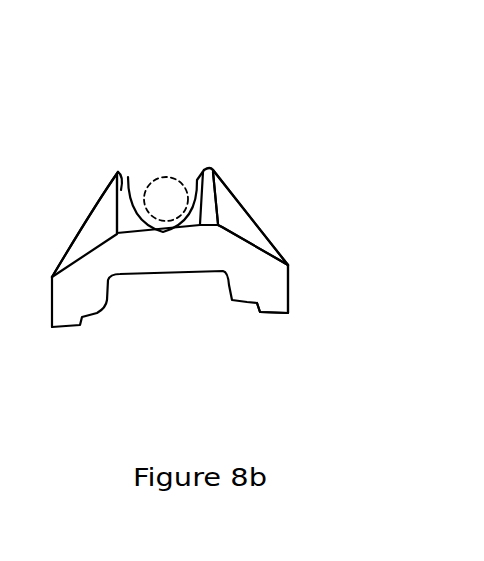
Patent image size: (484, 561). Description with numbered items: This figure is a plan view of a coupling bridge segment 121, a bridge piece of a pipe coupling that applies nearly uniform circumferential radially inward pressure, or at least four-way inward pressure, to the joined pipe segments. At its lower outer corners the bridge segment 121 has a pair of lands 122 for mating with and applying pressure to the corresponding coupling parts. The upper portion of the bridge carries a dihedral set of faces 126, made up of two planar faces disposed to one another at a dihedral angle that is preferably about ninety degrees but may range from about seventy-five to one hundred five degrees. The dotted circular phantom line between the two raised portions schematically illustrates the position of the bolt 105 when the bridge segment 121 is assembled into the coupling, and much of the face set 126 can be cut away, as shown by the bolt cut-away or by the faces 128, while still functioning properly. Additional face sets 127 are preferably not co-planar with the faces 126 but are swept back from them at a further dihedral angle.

The coupling bridge segment 121 is at (300, 272).
The land 122 is at (285, 313).
The dihedral set of faces 126 is at (128, 177).
The additional face sets 127 is at (233, 213).
The faces 128 is at (258, 218).
The bolt 105 is at (170, 175).